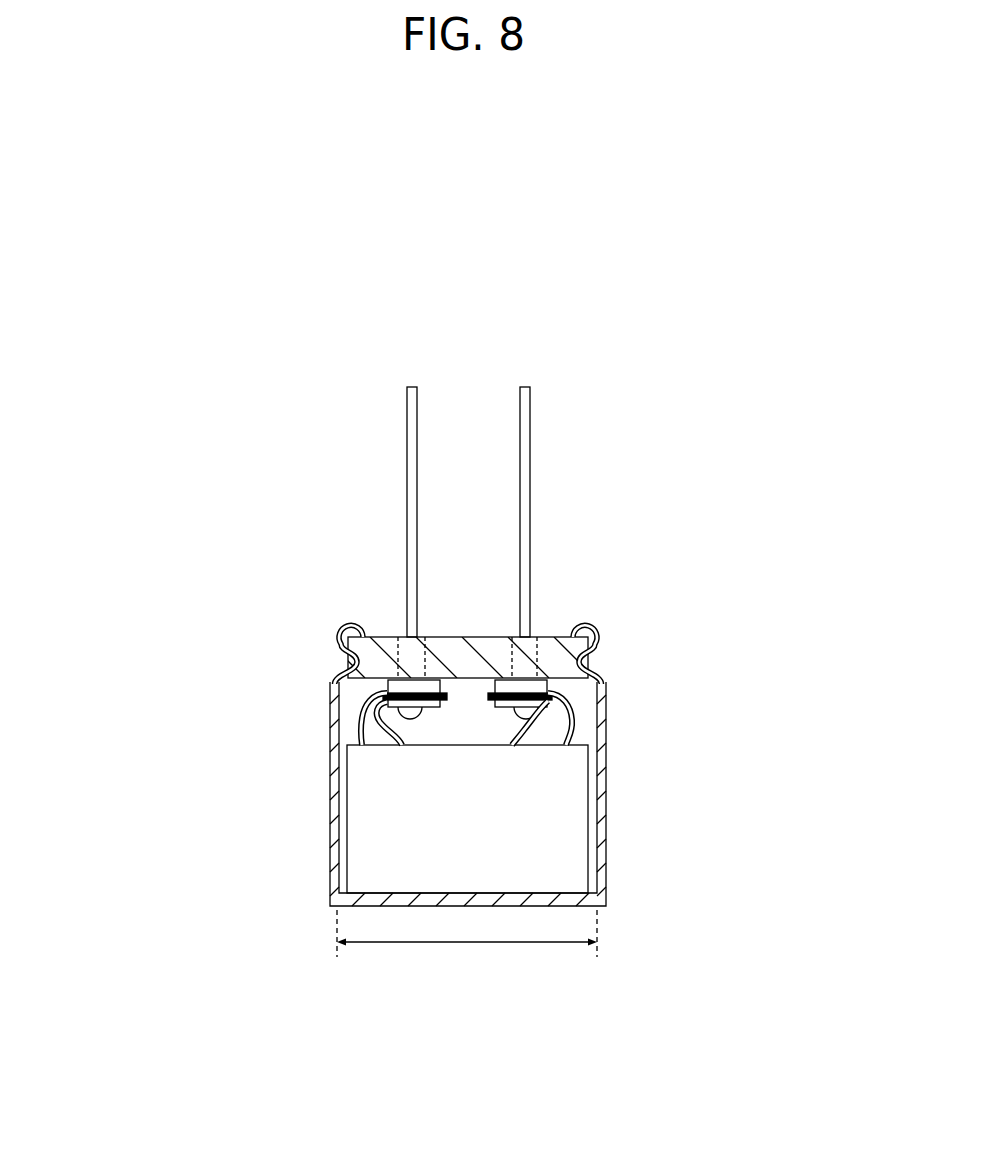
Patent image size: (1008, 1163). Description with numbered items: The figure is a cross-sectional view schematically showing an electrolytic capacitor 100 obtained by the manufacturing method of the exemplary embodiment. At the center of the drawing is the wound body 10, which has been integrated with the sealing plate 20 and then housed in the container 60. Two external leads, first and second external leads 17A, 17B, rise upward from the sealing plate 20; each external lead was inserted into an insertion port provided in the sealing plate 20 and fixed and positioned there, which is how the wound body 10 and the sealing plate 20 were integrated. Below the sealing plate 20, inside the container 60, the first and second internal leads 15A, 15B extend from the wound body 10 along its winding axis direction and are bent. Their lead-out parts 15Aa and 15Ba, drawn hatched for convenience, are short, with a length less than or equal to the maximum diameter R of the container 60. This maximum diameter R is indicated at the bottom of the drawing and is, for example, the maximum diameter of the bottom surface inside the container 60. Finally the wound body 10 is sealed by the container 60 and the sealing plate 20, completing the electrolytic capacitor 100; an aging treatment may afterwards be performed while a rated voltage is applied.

The electrolytic capacitor 100 is at (493, 209).
The first external lead 17A is at (398, 448).
The second external lead 17B is at (537, 448).
The sealing plate 20 is at (553, 637).
The container 60 is at (606, 785).
The wound body 10 is at (560, 842).
The first internal lead 15A is at (337, 692).
The first lead-out part 15Aa is at (378, 728).
The second internal lead 15B is at (591, 694).
The second lead-out part 15Ba is at (580, 728).
The maximum diameter of the container R is at (467, 944).